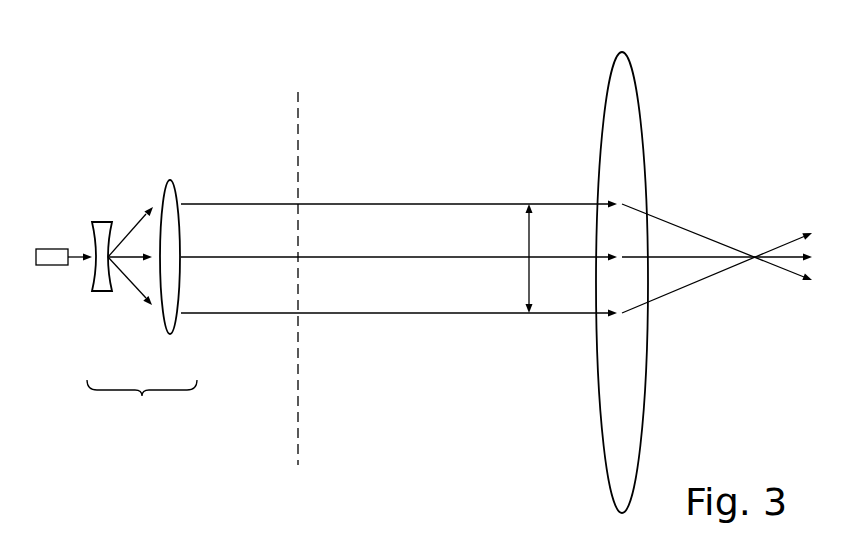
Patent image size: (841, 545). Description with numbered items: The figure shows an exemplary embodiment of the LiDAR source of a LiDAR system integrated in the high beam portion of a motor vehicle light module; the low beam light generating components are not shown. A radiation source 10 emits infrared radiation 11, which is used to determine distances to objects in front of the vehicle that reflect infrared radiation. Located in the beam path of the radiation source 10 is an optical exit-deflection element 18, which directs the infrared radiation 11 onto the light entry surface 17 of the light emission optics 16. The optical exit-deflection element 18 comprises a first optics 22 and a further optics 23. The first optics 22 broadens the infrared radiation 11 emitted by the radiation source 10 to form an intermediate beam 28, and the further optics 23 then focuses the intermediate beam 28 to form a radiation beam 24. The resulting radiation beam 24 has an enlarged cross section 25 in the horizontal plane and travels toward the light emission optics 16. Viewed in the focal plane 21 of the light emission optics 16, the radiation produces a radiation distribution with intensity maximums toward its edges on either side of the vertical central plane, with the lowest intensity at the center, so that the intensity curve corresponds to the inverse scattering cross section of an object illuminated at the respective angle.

The radiation source 10 is at (42, 255).
The infrared radiation 11 is at (82, 252).
The light emission optics 16 is at (628, 100).
The light entry surface 17 is at (600, 128).
The optical exit-deflection element 18 is at (142, 402).
The focal plane 21 is at (300, 125).
The first optics 22 is at (102, 292).
The further optics 23 is at (170, 180).
The radiation beam 24 is at (381, 222).
The enlarged cross section 25 is at (529, 276).
The intermediate beam 28 is at (135, 243).